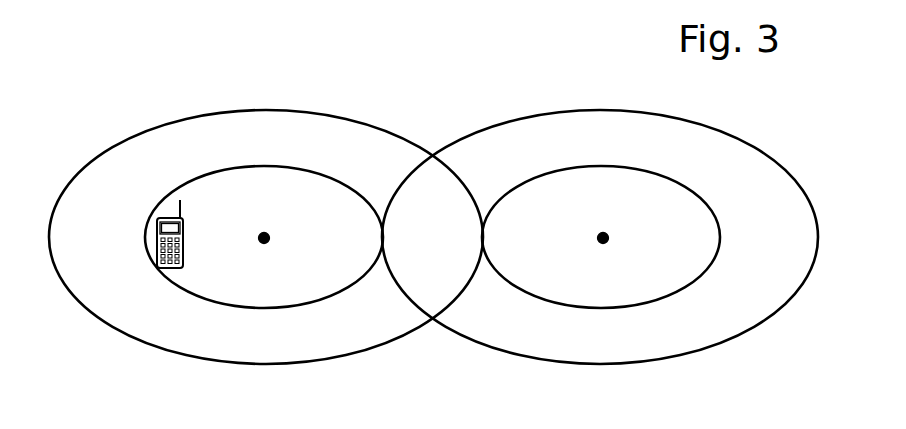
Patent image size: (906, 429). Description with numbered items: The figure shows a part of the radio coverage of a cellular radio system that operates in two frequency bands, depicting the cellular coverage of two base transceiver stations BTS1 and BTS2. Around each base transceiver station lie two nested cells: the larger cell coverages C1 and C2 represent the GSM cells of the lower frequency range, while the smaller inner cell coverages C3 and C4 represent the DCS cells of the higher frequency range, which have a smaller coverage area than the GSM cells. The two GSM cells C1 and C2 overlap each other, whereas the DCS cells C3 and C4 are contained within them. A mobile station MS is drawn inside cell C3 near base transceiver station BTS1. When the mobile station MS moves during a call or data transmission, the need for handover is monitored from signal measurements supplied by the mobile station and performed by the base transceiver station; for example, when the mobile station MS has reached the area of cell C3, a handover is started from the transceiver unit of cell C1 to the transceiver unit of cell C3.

The cell coverage C1 is at (86, 168).
The cell coverage C2 is at (757, 146).
The cell coverage C3 is at (150, 222).
The cell coverage C4 is at (719, 212).
The mobile station MS is at (185, 221).
The base transceiver station BTS1 is at (288, 221).
The base transceiver station BTS2 is at (584, 222).